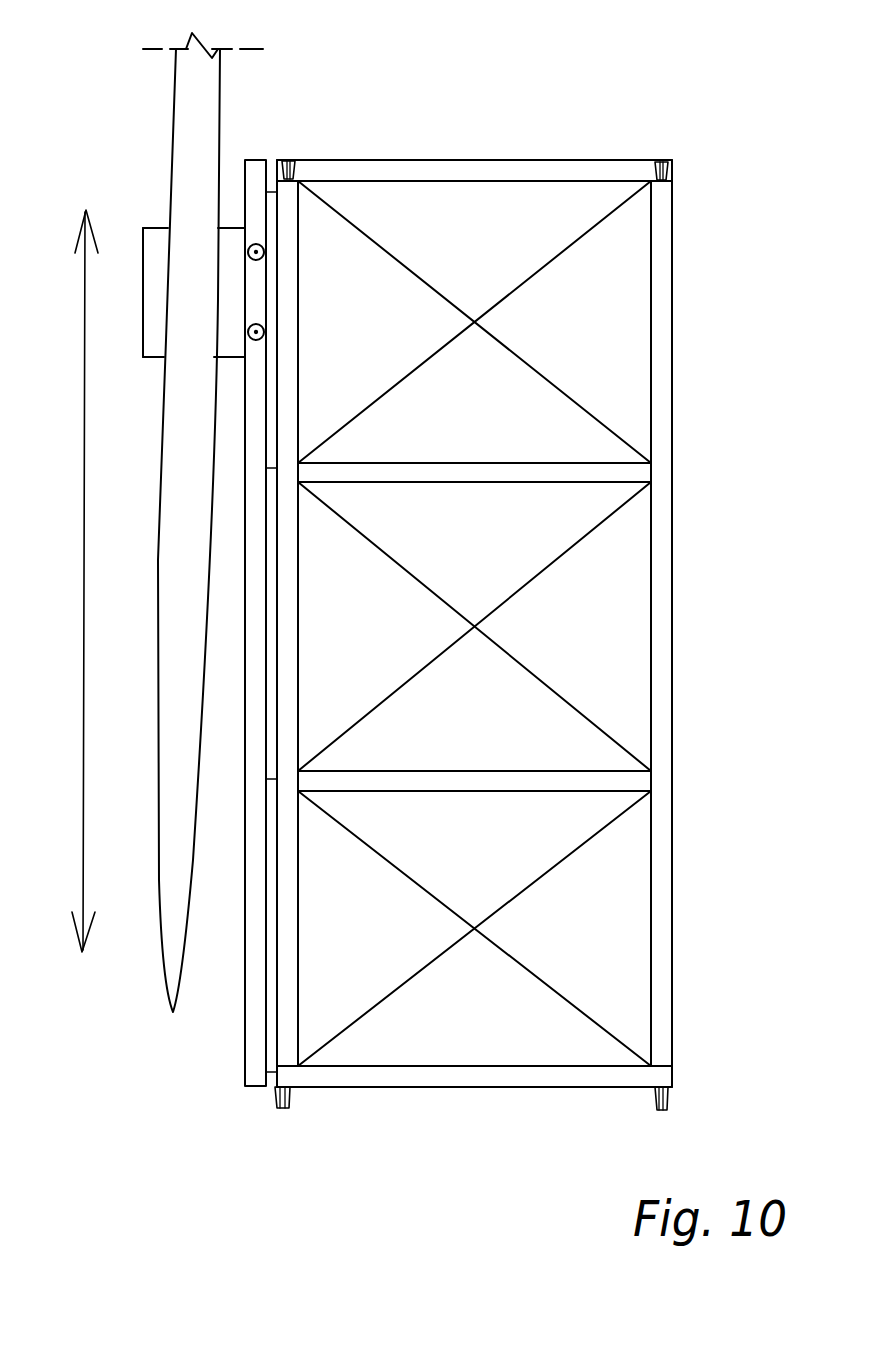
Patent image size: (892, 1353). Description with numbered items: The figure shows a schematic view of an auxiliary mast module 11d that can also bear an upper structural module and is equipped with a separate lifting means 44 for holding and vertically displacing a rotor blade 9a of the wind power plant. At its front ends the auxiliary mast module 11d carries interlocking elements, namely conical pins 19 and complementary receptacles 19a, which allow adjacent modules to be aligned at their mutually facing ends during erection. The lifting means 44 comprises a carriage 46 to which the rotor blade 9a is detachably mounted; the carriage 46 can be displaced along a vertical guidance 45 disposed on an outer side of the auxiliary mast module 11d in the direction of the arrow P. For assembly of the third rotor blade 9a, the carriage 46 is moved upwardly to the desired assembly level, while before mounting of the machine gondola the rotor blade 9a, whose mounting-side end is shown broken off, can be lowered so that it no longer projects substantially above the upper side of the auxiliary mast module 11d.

The auxiliary mast module 11d is at (684, 202).
The complementary receptacle 19a is at (293, 166).
The conical pin 19 is at (288, 1097).
The lifting means 44 is at (260, 149).
The vertical guidance 45 is at (248, 1027).
The carriage 46 is at (143, 233).
The rotor blade 9a is at (169, 968).
The arrow P is at (83, 557).